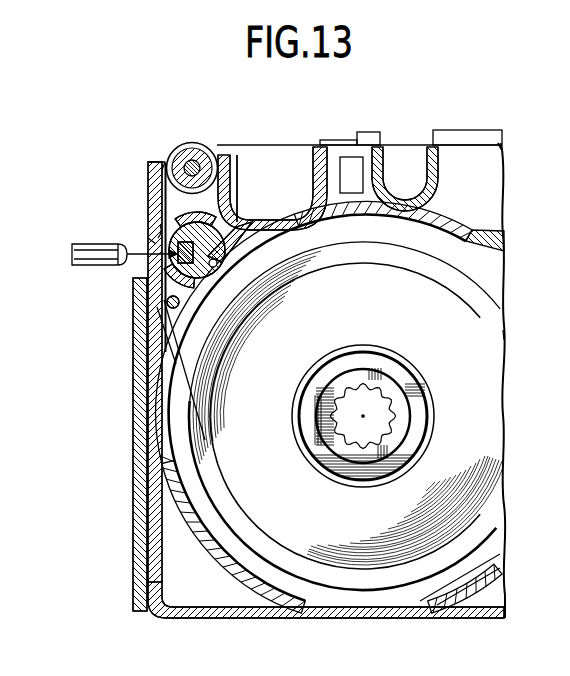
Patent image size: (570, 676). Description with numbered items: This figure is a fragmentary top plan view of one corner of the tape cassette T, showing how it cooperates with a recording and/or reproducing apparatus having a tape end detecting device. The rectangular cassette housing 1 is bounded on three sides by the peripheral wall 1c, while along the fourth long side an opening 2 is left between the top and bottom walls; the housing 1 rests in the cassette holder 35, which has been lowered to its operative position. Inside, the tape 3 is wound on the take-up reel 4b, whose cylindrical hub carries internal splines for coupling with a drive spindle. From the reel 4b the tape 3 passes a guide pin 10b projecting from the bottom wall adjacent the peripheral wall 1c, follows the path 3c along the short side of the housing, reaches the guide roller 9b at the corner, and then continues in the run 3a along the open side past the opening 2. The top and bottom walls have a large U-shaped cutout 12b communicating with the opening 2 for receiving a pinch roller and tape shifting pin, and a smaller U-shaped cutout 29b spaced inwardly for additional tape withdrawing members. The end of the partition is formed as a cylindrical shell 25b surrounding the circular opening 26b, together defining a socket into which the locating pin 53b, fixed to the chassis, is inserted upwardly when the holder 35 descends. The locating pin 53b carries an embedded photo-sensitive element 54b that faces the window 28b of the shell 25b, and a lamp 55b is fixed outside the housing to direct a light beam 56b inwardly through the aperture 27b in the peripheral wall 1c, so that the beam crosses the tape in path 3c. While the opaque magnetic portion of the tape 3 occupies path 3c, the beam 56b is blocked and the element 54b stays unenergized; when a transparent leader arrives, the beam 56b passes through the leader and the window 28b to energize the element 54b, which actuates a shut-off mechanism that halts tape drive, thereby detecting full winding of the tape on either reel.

The cassette housing 1 is at (511, 590).
The peripheral wall 1c is at (148, 385).
The opening 2 is at (477, 140).
The tape 3 is at (492, 405).
The run 3a is at (502, 150).
The path 3c is at (162, 212).
The take-up reel 4b is at (489, 526).
The guide roller 9b is at (204, 158).
The guide pin 10b is at (164, 303).
The U-shaped cutout 12b is at (335, 127).
The cylindrical shell 25b is at (206, 242).
The circular opening 26b is at (195, 252).
The aperture 27b is at (148, 240).
The window 28b is at (159, 236).
The small U-shaped cutout 29b is at (459, 124).
The cassette holder 35 is at (133, 490).
The locating pin 53b is at (215, 220).
The photo-sensitive element 54b is at (166, 302).
The lamp 55b is at (80, 244).
The light beam 56b is at (170, 268).
The tape cassette T is at (508, 332).